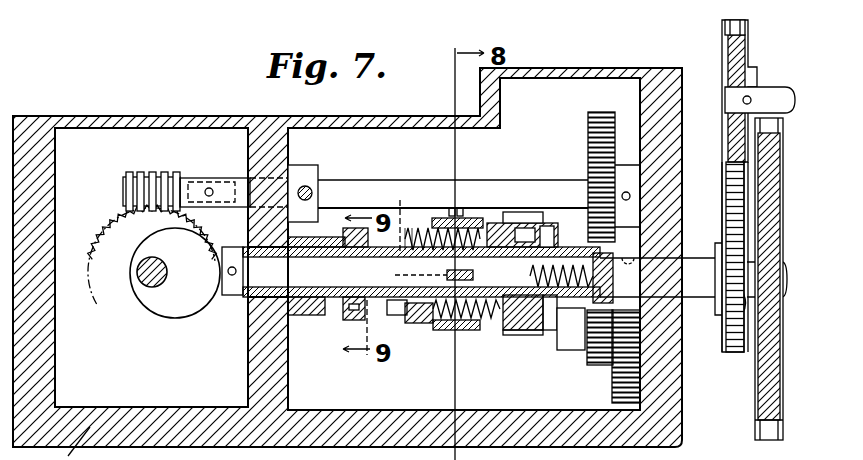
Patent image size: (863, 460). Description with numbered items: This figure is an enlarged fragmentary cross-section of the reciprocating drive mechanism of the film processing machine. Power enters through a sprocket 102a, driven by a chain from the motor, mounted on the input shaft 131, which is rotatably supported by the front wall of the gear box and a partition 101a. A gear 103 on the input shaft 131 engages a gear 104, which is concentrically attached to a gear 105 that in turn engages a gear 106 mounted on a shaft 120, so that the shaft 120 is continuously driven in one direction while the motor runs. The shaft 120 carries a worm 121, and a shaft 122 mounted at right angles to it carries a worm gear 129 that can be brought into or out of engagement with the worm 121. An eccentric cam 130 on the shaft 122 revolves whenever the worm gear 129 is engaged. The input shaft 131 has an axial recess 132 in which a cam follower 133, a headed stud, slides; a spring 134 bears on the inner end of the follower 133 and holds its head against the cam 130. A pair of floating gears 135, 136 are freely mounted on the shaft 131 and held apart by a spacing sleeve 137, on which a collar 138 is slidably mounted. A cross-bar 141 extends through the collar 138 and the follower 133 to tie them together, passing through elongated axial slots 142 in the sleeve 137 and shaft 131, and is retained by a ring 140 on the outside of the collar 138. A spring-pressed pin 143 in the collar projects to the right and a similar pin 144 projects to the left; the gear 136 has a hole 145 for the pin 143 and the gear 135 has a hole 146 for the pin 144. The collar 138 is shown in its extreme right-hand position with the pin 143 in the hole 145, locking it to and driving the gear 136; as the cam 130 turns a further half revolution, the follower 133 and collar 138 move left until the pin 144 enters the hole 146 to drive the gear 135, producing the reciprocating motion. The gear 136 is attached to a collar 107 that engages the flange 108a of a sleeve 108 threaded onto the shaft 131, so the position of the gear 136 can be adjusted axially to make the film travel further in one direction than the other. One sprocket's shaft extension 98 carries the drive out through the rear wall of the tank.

The extension 98 is at (764, 95).
The partition 101a is at (263, 377).
The sprocket 102a is at (767, 380).
The gear 103 is at (682, 206).
The gear 104 is at (640, 387).
The gear 105 is at (613, 343).
The gear 106 is at (596, 113).
The collar 107 is at (548, 307).
The sleeve 108 is at (587, 320).
The flange 108a is at (545, 310).
The shaft 120 is at (517, 188).
The worm 121 is at (153, 175).
The shaft 122 is at (152, 287).
The worm gear 129 is at (112, 228).
The eccentric cam 130 is at (193, 288).
The input shaft 131 is at (697, 260).
The axial recess 132 is at (565, 242).
The cam follower 133 is at (345, 310).
The spring 134 is at (568, 310).
The floating gear 135 is at (307, 302).
The floating gear 136 is at (523, 333).
The spacing sleeve 137 is at (414, 325).
The collar 138 is at (462, 213).
The ring 140 is at (460, 330).
The cross-bar 141 is at (473, 274).
The elongated axial slots 142 is at (400, 225).
The spring-pressed pin 143 is at (497, 242).
The spring-pressed pin 144 is at (397, 312).
The hole 145 is at (536, 240).
The hole 146 is at (400, 275).